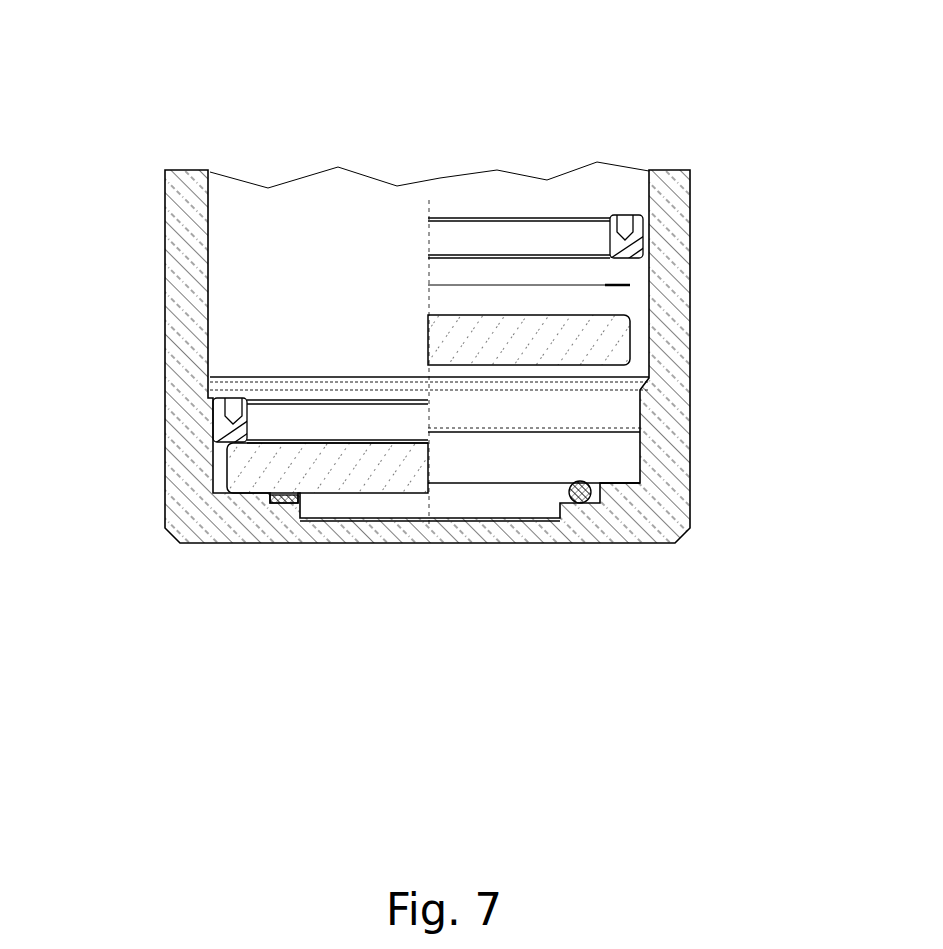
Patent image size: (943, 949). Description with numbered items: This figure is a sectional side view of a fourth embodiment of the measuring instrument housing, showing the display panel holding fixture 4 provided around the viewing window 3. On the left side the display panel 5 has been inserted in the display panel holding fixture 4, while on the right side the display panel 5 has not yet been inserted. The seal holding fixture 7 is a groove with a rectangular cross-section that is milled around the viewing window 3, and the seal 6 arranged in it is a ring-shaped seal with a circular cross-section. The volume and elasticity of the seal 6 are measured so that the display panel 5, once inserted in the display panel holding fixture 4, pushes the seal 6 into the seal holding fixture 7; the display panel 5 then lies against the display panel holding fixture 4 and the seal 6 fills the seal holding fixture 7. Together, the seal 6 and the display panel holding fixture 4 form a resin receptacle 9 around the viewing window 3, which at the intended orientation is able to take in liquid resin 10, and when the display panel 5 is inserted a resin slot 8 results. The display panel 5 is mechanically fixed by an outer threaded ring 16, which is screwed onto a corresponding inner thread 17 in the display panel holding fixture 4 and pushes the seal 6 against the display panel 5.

The viewing window 3 is at (371, 570).
The display panel holding fixture 4 is at (716, 140).
The display panel 5 is at (630, 353).
The seal 6 is at (262, 507).
The seal holding fixture 7 is at (283, 503).
The resin slot 8 is at (200, 484).
The resin receptacle 9 is at (634, 501).
The liquid resin 10 is at (630, 480).
The outer threaded ring 16 is at (640, 230).
The inner thread 17 is at (640, 408).